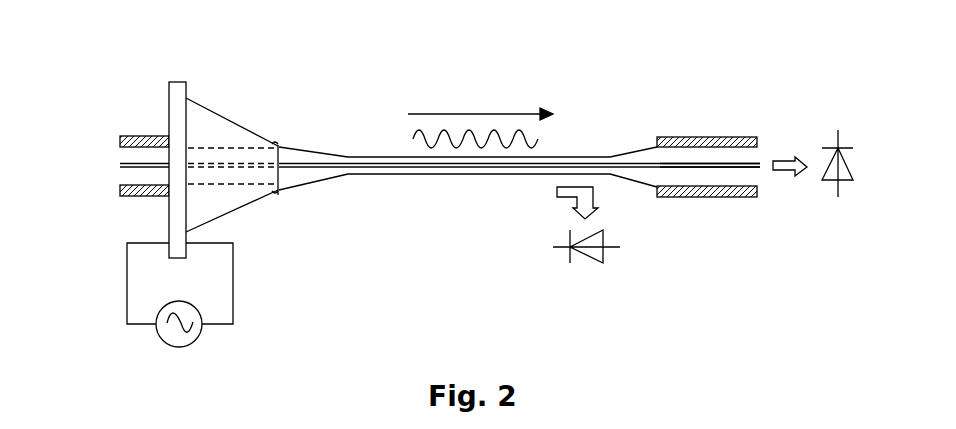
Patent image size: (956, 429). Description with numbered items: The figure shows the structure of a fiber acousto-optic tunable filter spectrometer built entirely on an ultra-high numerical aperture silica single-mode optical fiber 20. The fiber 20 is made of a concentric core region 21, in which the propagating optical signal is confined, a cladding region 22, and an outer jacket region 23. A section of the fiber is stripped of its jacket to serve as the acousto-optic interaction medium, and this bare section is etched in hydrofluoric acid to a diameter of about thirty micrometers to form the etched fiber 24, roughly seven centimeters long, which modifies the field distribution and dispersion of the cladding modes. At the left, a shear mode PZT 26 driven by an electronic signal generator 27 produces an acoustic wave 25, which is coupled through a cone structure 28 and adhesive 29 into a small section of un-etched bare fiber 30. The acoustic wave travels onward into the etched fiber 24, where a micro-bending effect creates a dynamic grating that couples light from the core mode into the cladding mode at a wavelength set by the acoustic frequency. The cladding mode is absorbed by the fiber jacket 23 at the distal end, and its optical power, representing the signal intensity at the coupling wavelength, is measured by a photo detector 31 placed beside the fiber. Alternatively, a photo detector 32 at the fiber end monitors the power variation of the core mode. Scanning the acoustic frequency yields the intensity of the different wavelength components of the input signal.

The optical fiber 20 is at (142, 136).
The core region 21 is at (707, 165).
The cladding region 22 is at (728, 157).
The jacket region 23 is at (687, 140).
The etched fiber 24 is at (423, 175).
The acoustic wave 25 is at (467, 133).
The shear mode PZT 26 is at (187, 93).
The electronic signal generator 27 is at (178, 347).
The cone structure 28 is at (238, 125).
The adhesive 29 is at (281, 192).
The un-etched bare fiber 30 is at (298, 147).
The photo detector 31 is at (588, 267).
The photo detector 32 is at (830, 193).